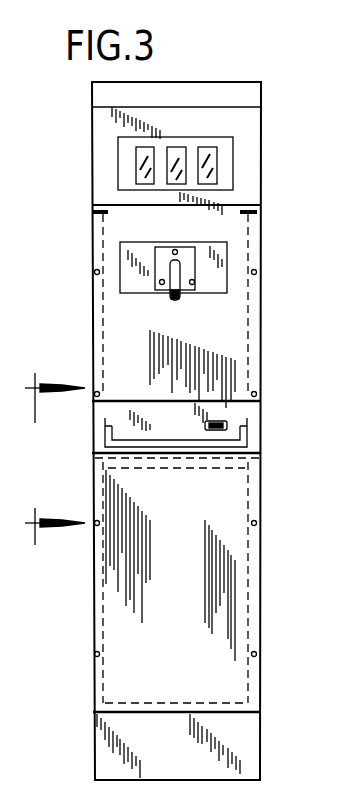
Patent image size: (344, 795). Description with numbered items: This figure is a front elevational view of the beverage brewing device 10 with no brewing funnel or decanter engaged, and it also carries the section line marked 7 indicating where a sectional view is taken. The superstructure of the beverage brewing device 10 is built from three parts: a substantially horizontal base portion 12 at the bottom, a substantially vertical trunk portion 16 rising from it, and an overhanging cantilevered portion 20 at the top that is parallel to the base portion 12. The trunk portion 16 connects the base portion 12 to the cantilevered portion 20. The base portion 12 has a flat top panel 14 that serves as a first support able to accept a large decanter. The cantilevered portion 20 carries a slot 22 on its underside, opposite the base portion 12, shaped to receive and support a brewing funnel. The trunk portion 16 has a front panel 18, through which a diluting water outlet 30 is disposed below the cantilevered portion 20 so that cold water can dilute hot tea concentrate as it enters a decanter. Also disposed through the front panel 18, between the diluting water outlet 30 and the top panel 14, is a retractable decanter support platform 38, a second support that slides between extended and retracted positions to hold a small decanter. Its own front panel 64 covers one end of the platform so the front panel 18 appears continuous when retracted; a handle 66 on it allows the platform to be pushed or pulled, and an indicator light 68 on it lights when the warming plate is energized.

The beverage brewing device 10 is at (213, 76).
The cantilevered portion 20 is at (262, 92).
The slot 22 is at (257, 214).
The trunk portion 16 is at (92, 243).
The diluting water outlet 30 is at (180, 268).
The retractable decanter support platform 38 is at (272, 418).
The front panel 64 is at (255, 438).
The indicator light 68 is at (213, 421).
The handle 66 is at (207, 453).
The front panel 18 is at (125, 632).
The top panel 14 is at (247, 712).
The base portion 12 is at (93, 760).
The section line 7- 7 is at (55, 460).